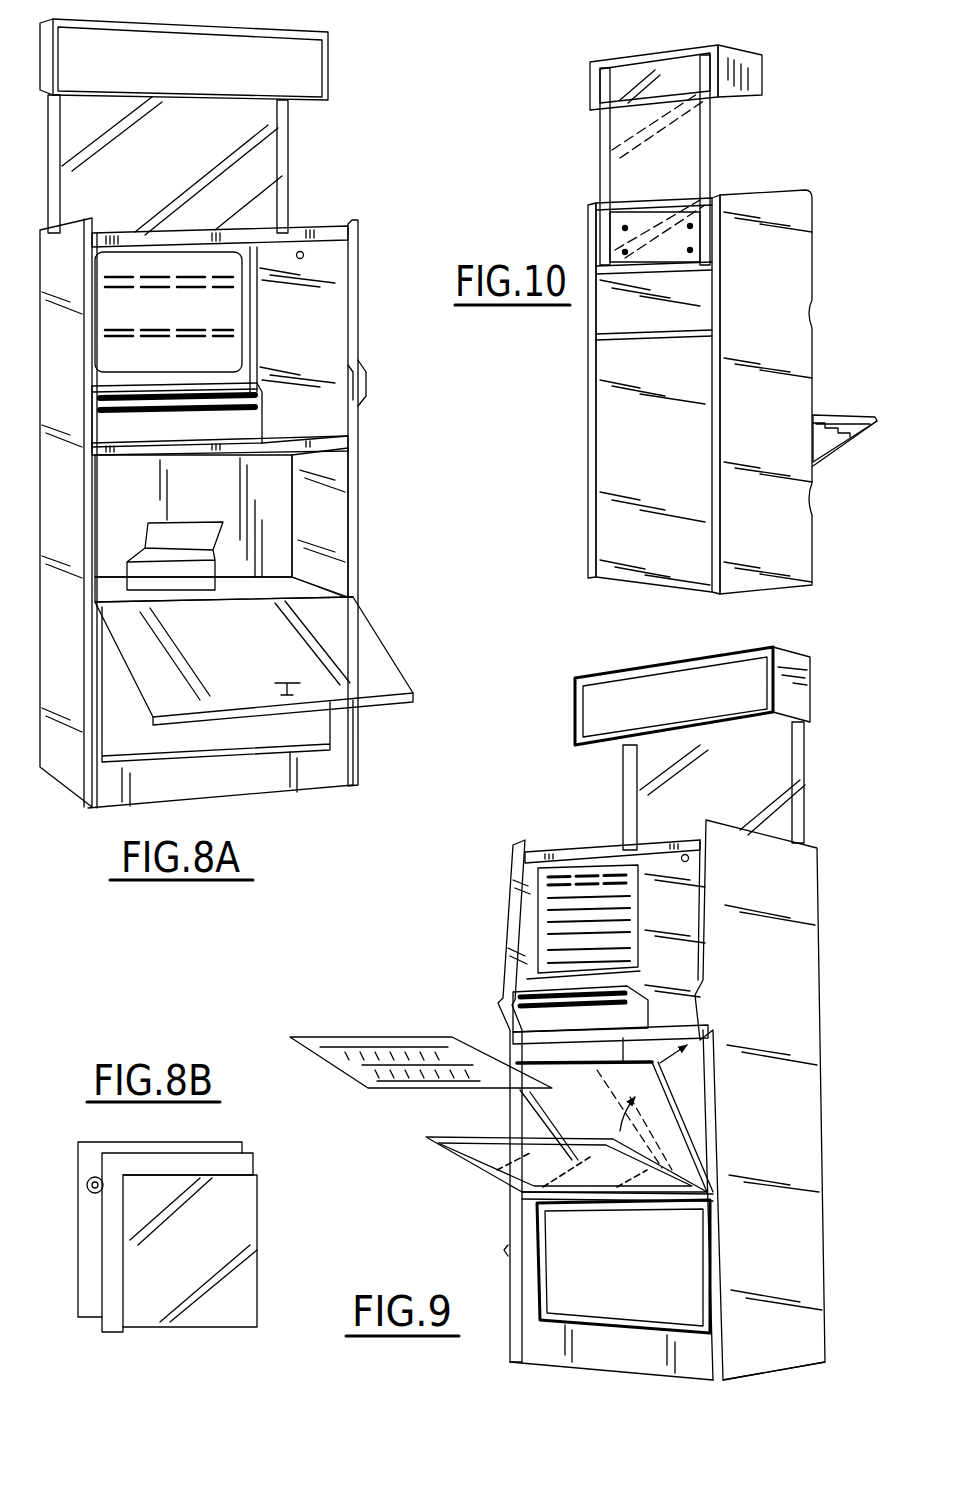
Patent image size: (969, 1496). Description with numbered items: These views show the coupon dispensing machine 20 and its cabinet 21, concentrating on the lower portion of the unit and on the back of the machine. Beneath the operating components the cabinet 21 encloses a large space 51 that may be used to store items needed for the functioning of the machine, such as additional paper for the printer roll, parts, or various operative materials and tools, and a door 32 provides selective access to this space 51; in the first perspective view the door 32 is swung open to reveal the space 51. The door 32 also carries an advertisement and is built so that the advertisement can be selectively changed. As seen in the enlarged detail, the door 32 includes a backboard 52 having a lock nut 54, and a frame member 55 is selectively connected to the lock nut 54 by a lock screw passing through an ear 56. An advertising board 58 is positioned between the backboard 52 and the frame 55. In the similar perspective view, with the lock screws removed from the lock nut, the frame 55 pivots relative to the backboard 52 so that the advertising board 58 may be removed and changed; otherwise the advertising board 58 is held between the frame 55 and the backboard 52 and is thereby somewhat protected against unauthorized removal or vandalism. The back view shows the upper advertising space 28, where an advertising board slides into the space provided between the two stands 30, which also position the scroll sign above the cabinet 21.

In FIG. 8A, the coupon dispensing machine 20 is at (236, 413).
In FIG. 10, the coupon dispensing machine 20 is at (698, 319).
In FIG. 9, the coupon dispensing machine 20 is at (557, 1013).
In FIG. 8A, the cabinet 21 is at (357, 378).
In FIG. 10, the advertising space 28 is at (613, 147).
In FIG. 10, the stands 30 is at (600, 90).
In FIG. 8A, the door 32 is at (367, 642).
In FIG. 8B, the door 32 is at (243, 1127).
In FIG. 8A, the space 51 is at (332, 495).
In FIG. 8B, the backboard 52 is at (82, 1151).
In FIG. 9, the backboard 52 is at (670, 1128).
In FIG. 8B, the lock nut 54 is at (92, 1190).
In FIG. 8B, the frame member 55 is at (243, 1167).
In FIG. 9, the frame member 55 is at (443, 1153).
In FIG. 8B, the ear 56 is at (100, 1182).
In FIG. 8B, the advertising board 58 is at (247, 1219).
In FIG. 9, the advertising board 58 is at (404, 1039).